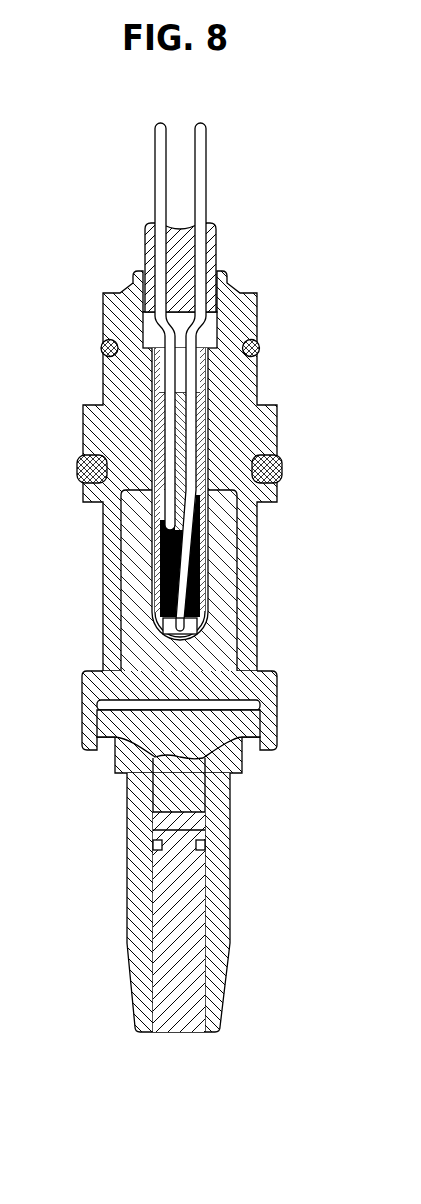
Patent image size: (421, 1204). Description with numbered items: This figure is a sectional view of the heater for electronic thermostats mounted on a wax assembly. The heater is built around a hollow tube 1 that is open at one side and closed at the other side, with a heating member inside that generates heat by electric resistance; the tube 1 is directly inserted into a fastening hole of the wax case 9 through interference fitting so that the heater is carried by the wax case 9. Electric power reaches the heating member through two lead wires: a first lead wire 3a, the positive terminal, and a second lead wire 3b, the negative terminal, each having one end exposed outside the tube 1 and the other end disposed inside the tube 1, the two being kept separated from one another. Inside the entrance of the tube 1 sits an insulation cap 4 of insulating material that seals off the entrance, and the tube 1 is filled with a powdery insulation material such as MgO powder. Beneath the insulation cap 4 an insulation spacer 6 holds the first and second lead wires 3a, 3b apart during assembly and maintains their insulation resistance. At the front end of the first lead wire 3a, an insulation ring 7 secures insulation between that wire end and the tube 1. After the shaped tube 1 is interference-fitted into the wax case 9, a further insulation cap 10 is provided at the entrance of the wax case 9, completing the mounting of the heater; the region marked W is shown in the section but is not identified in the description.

The hollow tube 1 is at (153, 420).
The first lead wire 3a is at (205, 160).
The second lead wire 3b is at (157, 159).
The insulation cap 4 is at (160, 333).
The insulation spacer 6 is at (160, 396).
The insulation ring 7 is at (162, 628).
The wax case 9 is at (247, 379).
The insulation cap 10 is at (190, 253).
The filler material W is at (217, 664).